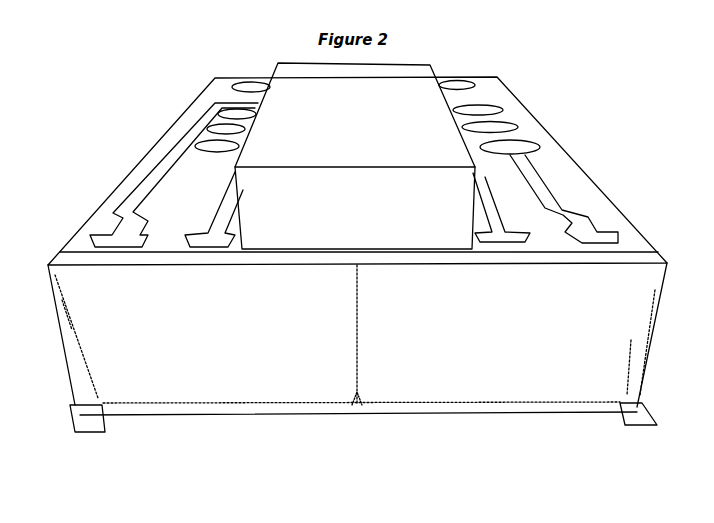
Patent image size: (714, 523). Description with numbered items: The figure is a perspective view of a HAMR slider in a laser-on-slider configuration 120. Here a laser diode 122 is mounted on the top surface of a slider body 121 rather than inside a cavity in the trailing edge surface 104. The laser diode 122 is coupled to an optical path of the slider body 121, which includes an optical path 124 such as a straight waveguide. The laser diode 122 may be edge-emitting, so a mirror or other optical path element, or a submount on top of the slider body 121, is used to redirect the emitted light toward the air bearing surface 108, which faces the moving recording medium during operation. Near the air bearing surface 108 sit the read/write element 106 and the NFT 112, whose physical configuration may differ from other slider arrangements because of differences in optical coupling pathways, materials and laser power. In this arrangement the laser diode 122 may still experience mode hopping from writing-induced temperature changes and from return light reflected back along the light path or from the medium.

The laser-on-slider configuration 120 is at (352, 289).
The slider body 121 is at (82, 227).
The laser diode 122 is at (432, 64).
The optical path 124 is at (357, 320).
The read/write element 106 is at (360, 405).
The NFT 112 is at (357, 404).
The trailing edge surface 104 is at (92, 433).
The air bearing surface 108 is at (650, 427).